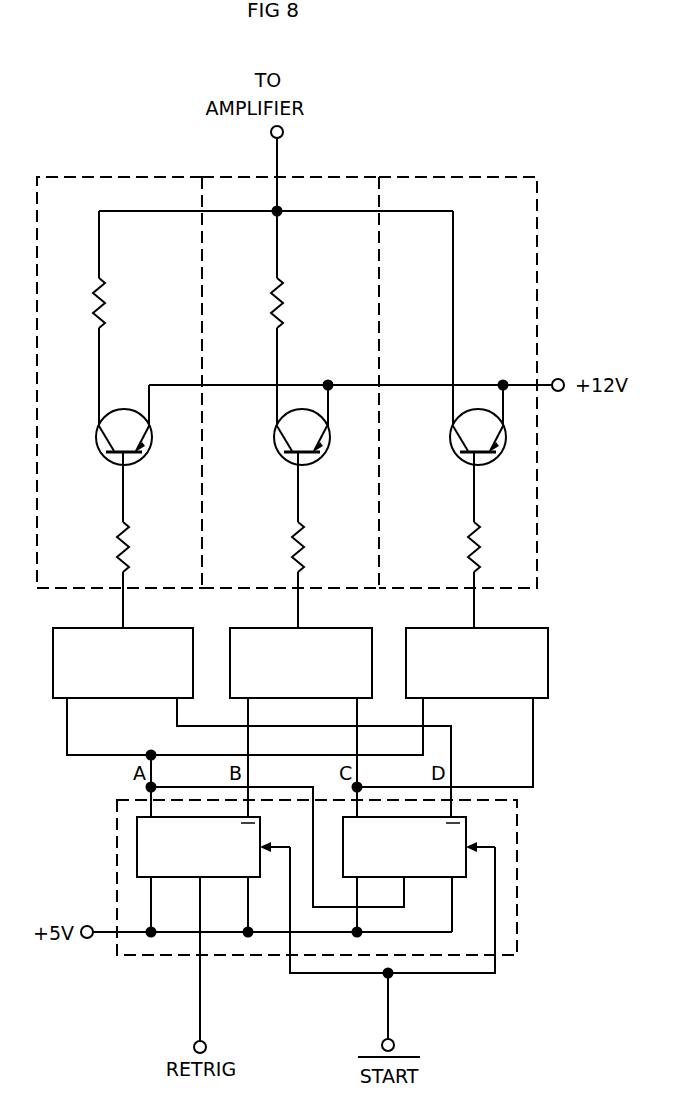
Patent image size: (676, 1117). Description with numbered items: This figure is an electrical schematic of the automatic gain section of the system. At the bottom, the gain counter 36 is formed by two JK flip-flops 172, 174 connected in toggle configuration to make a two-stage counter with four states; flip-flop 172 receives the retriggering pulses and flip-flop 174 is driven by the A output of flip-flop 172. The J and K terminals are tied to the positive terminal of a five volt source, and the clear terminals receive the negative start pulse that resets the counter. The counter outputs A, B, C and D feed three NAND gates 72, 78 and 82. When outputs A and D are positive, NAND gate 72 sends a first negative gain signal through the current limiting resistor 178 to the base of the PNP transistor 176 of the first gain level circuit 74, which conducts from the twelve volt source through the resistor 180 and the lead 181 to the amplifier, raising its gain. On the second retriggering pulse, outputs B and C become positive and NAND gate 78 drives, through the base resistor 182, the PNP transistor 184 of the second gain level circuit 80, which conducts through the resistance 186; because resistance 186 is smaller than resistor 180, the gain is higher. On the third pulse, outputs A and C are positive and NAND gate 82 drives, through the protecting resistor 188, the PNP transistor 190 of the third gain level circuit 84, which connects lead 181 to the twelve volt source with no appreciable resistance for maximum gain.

The gain counter 36 is at (517, 823).
The NAND gate 72 is at (123, 663).
The first gain level circuit 74 is at (76, 176).
The NAND gate 78 is at (301, 663).
The second gain level circuit 80 is at (233, 176).
The NAND gate 82 is at (477, 663).
The third gain level circuit 84 is at (505, 176).
The JK flip-flop 172 is at (213, 848).
The JK flip-flop 174 is at (419, 848).
The PNP transistor 176 is at (152, 438).
The current limiting resistor 178 is at (131, 528).
The resistor 180 is at (108, 292).
The lead 181 is at (285, 131).
The base resistor 182 is at (306, 528).
The PNP transistor 184 is at (330, 438).
The resistance 186 is at (286, 292).
The protecting resistor 188 is at (482, 528).
The PNP transistor 190 is at (506, 432).